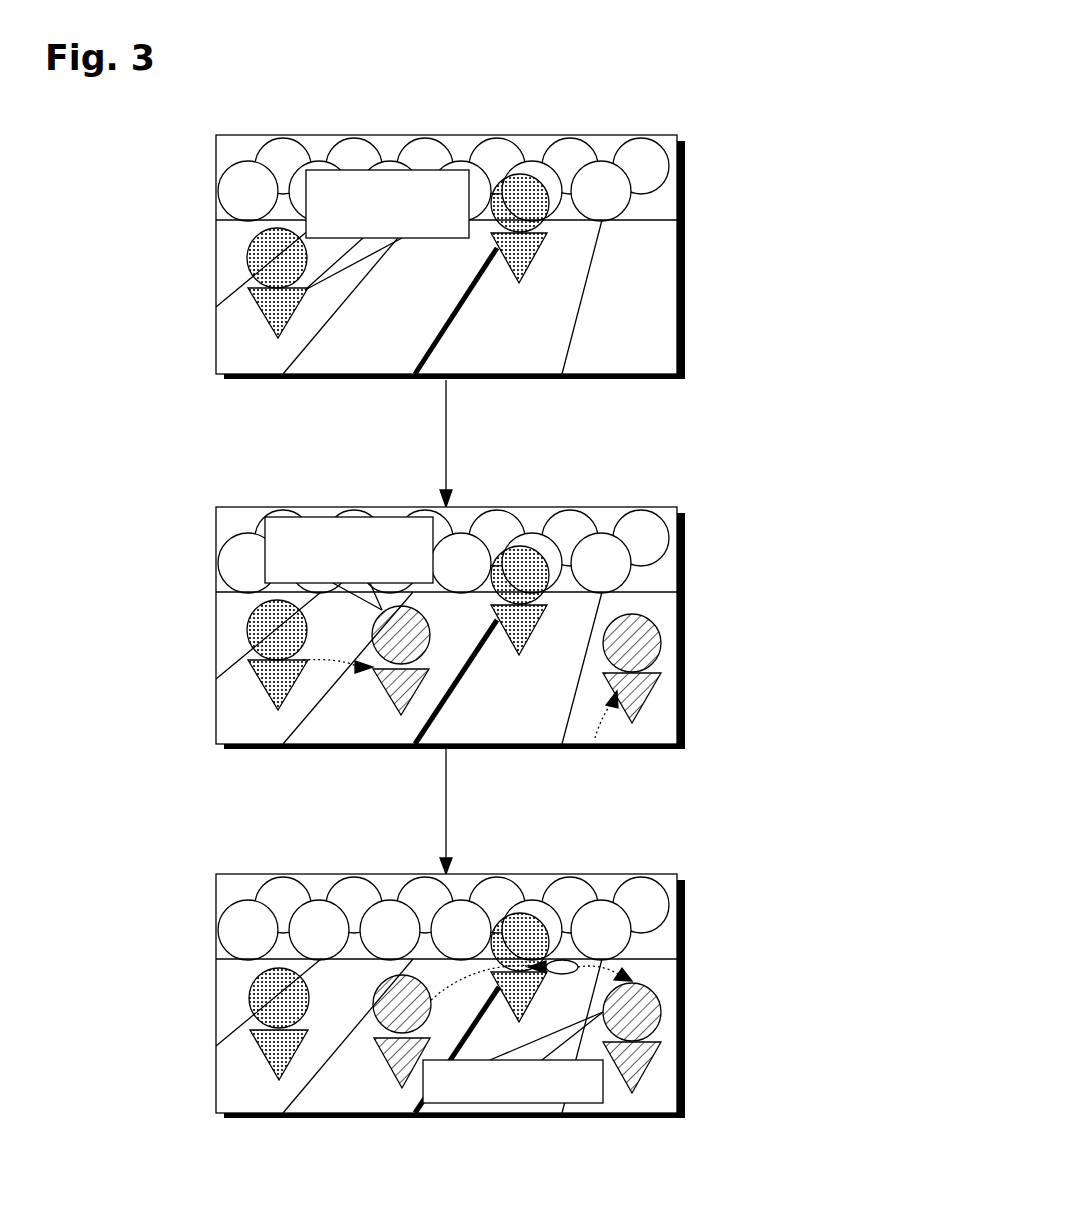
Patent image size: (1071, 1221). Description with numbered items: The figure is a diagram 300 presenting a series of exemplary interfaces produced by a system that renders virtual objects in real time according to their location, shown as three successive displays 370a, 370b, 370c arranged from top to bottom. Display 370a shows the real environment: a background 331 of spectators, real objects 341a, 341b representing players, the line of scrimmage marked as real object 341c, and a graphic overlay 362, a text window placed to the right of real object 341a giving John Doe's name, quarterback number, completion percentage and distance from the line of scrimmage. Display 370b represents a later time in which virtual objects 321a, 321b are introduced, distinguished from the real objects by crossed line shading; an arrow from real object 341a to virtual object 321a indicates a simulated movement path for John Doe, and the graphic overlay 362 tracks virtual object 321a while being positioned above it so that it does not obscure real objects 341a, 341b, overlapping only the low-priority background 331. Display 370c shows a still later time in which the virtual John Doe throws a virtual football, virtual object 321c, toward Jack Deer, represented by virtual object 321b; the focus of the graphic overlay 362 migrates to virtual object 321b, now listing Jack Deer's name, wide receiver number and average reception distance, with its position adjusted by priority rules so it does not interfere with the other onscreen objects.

The diagram 300 is at (765, 86).
The background 331 is at (693, 959).
The real object 341a is at (178, 629).
The real object 341b is at (426, 539).
The real object 341c is at (437, 337).
The graphic overlay 362 is at (340, 624).
The display 370a is at (683, 379).
The display 370b is at (685, 749).
The display 370c is at (686, 1118).
The virtual object 321a is at (255, 882).
The virtual object 321b is at (720, 835).
The virtual object 321c is at (568, 830).